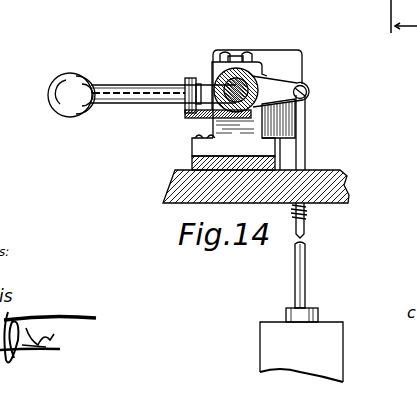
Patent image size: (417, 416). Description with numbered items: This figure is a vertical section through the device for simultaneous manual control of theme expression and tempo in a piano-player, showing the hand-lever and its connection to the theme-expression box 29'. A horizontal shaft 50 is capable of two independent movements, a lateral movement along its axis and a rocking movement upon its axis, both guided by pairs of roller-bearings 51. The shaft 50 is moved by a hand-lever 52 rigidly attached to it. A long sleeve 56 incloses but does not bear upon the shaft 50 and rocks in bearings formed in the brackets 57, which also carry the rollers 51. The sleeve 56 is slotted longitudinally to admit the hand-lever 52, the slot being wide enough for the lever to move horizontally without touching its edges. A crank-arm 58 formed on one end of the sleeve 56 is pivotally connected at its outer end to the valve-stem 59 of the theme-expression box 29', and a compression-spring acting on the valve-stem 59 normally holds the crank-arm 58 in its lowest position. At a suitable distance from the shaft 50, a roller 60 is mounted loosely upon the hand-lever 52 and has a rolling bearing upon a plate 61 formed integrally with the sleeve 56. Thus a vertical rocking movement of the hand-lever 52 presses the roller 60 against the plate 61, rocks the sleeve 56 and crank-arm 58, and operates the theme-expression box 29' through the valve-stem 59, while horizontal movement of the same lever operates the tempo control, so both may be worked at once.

The theme-expression box 29' is at (324, 352).
The horizontal shaft 50 is at (243, 92).
The roller-bearings 51 is at (252, 61).
The hand-lever 52 is at (62, 97).
The sleeve 56 is at (257, 82).
The brackets 57 is at (222, 69).
The crank-arm 58 is at (277, 90).
The valve-stem 59 is at (306, 226).
The roller 60 is at (184, 82).
The plate 61 is at (193, 123).